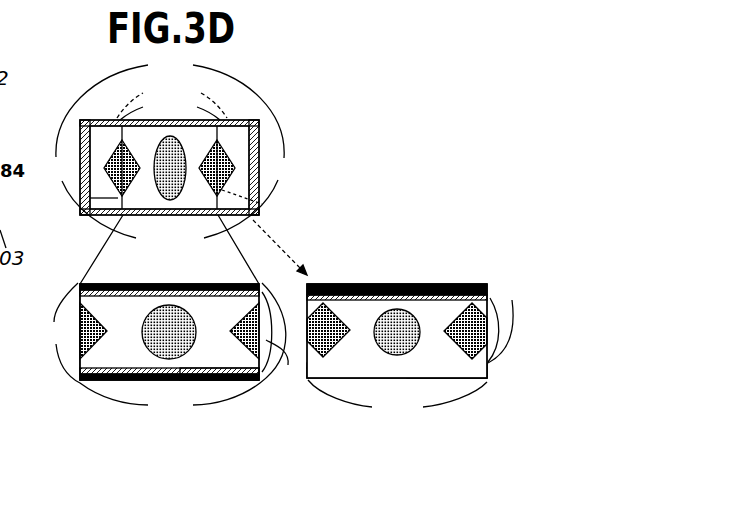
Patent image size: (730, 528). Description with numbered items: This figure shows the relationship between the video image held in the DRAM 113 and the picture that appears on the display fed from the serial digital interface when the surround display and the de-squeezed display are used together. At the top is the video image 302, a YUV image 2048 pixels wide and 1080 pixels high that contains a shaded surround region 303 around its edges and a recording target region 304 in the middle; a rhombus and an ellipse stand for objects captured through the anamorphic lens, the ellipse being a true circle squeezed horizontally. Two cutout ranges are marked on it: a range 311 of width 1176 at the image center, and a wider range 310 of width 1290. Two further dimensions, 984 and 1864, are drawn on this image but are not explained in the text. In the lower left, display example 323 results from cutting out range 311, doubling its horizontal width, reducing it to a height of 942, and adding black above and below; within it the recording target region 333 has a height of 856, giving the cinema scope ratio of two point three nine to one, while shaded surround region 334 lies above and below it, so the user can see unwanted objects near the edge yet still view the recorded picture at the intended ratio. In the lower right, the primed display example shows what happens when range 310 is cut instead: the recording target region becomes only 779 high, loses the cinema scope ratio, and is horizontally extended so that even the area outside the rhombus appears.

The horizontal pixel width 2048 is at (270, 236).
The horizontal width of cutout range 1290 is at (172, 99).
The horizontal width of cutout range 1176 is at (170, 109).
The vertical pixel height 1080 is at (61, 250).
The right side wall 984 is at (276, 167).
The video image 302 is at (262, 133).
The surround region 303 is at (262, 210).
The range 310 is at (90, 198).
The DRAM 113 is at (84, 220).
The central lens 1864 is at (173, 193).
The recording target region 304 is at (123, 216).
The range 311 is at (217, 216).
The display example 323 is at (98, 380).
The recording target region 333 is at (132, 372).
The surround region 334 is at (221, 374).
The vertical height of recording target region 856 is at (264, 372).
The vertical height of de-squeezed range 942 is at (288, 365).
The vertical height of recording target region 779 is at (490, 298).